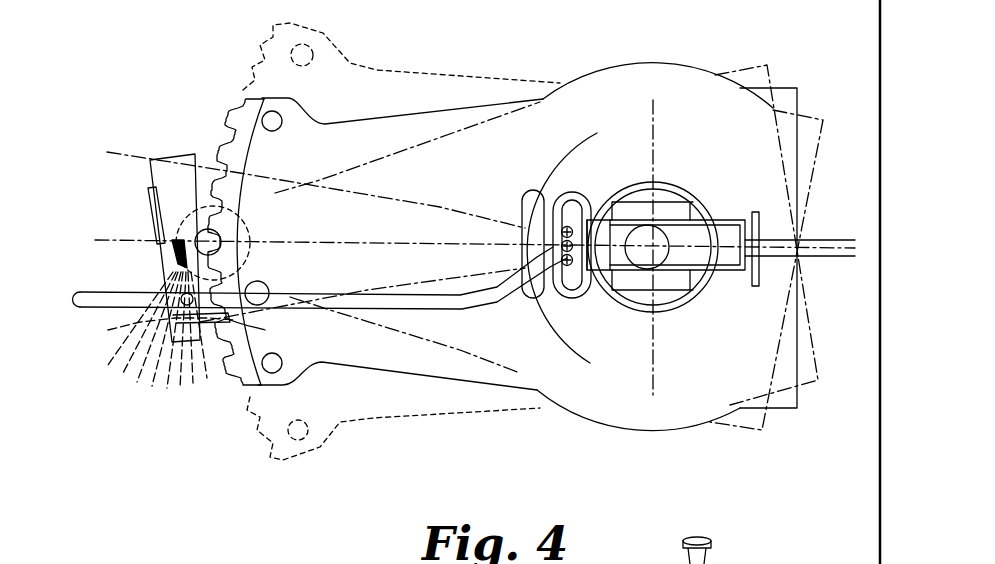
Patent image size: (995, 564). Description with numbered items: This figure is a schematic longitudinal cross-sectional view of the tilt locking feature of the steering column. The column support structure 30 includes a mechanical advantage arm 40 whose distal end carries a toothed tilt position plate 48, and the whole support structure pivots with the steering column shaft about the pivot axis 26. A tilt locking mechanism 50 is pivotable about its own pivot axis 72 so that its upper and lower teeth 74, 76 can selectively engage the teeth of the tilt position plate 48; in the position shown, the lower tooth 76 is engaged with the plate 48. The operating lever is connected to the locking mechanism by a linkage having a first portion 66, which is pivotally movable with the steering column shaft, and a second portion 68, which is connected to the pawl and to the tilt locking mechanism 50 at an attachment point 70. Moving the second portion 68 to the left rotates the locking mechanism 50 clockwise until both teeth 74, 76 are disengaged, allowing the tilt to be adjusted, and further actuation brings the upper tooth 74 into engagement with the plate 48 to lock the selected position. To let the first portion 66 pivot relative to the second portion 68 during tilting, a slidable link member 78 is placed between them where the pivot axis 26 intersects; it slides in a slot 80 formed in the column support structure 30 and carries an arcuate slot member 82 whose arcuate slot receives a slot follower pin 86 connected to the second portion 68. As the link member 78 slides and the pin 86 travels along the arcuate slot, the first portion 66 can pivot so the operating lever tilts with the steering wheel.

The pivot axis 26 is at (695, 185).
The column support structure 30 is at (628, 304).
The mechanical advantage arm 40 is at (393, 118).
The toothed tilt position plate 48 is at (218, 126).
The tilt locking mechanism 50 is at (125, 208).
The first portion of the linkage 66 is at (815, 240).
The second portion of the linkage 68 is at (468, 308).
The attachment point 70 is at (185, 318).
The pivot axis 72 is at (165, 247).
The upper tooth 74 is at (193, 157).
The lower tooth 76 is at (226, 318).
The slidable link member 78 is at (631, 200).
The slot 80 is at (673, 306).
The arcuate slot member 82 is at (585, 175).
The slot follower pin 86 is at (588, 300).